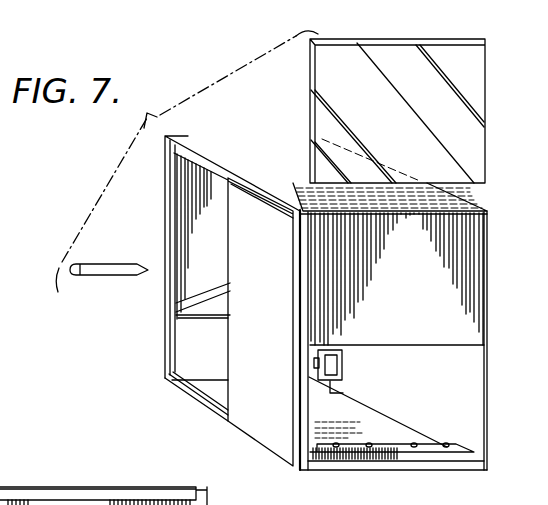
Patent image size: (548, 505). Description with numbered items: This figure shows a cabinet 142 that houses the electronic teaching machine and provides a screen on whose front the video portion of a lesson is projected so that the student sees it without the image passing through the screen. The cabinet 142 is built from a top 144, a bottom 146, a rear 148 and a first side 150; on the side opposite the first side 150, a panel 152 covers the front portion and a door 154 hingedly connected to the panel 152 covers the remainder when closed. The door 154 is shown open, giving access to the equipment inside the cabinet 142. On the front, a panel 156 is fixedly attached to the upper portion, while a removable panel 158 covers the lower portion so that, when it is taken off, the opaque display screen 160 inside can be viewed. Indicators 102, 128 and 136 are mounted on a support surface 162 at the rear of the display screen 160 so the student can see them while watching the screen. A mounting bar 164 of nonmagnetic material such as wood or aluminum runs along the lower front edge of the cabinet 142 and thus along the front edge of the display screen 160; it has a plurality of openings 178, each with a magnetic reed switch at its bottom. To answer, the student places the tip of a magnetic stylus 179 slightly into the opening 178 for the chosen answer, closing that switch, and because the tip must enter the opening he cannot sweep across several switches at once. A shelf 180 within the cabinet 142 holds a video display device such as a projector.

The indicator 102 is at (318, 368).
The indicator 128 is at (330, 356).
The indicator 136 is at (338, 362).
The cabinet 142 is at (246, 144).
The top 144 is at (213, 148).
The bottom 146 is at (212, 396).
The rear 148 is at (188, 197).
The first side 150 is at (456, 392).
The panel 152 is at (305, 230).
The door 154 is at (274, 454).
The panel 156 is at (320, 232).
The panel 158 is at (331, 78).
The display screen 160 is at (384, 425).
The support surface 162 is at (343, 393).
The mounting bar 164 is at (329, 450).
The openings 178 is at (370, 444).
The magnetic stylus 179 is at (99, 263).
The shelf 180 is at (183, 305).